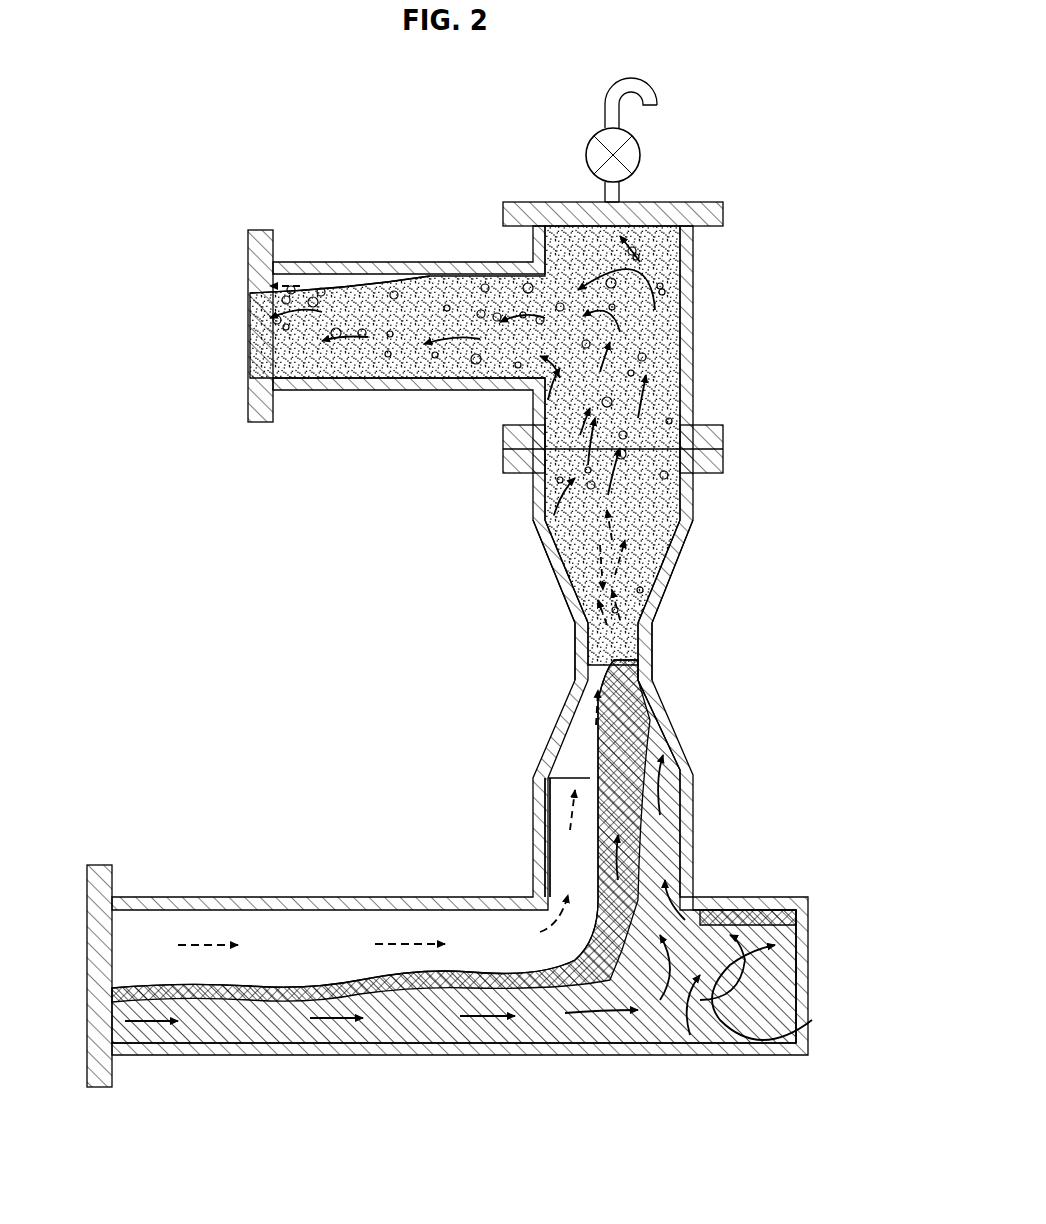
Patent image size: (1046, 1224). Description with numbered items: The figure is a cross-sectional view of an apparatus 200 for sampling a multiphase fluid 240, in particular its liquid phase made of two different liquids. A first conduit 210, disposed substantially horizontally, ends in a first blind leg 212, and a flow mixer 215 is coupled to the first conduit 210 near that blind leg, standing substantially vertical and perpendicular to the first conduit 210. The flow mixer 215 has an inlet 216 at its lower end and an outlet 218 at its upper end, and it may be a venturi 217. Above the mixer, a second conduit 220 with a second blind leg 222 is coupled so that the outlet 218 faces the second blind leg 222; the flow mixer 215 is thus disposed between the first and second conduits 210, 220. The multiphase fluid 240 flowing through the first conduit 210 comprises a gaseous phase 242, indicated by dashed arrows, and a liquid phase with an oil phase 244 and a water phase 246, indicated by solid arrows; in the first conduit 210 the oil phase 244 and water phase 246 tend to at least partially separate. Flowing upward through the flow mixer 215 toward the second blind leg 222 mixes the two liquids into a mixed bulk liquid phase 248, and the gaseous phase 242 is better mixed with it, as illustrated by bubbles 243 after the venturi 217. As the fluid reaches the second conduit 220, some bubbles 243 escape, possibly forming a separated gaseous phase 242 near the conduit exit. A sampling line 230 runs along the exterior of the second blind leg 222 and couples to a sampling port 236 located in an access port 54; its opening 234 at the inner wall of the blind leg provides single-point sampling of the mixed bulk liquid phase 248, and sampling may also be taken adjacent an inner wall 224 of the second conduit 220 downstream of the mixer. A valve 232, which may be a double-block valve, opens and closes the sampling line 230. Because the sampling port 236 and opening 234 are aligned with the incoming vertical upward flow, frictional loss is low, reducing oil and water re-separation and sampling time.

The access port 54 is at (674, 168).
The apparatus 200 is at (372, 116).
The first conduit 210 is at (190, 1057).
The first blind leg 212 is at (823, 1000).
The flow mixer 215 is at (676, 637).
The inlet 216 is at (522, 856).
The venturi 217 is at (577, 650).
The outlet 218 is at (545, 497).
The second conduit 220 is at (343, 262).
The second blind leg 222 is at (517, 233).
The inner wall 224 is at (672, 340).
The sampling line 230 is at (622, 78).
The valve 232 is at (594, 150).
The opening 234 is at (648, 255).
The sampling port 236 is at (603, 213).
The multiphase fluid 240 is at (88, 1015).
The gaseous phase 242 is at (291, 930).
The bubbles 243 is at (637, 590).
The oil phase 244 is at (440, 1005).
The water phase 246 is at (683, 1025).
The mixed bulk liquid phase 248 is at (665, 522).